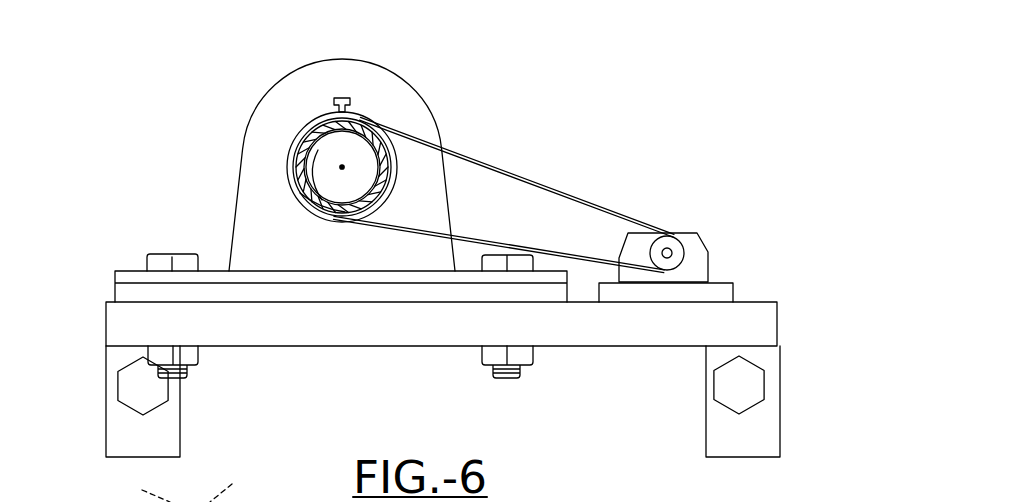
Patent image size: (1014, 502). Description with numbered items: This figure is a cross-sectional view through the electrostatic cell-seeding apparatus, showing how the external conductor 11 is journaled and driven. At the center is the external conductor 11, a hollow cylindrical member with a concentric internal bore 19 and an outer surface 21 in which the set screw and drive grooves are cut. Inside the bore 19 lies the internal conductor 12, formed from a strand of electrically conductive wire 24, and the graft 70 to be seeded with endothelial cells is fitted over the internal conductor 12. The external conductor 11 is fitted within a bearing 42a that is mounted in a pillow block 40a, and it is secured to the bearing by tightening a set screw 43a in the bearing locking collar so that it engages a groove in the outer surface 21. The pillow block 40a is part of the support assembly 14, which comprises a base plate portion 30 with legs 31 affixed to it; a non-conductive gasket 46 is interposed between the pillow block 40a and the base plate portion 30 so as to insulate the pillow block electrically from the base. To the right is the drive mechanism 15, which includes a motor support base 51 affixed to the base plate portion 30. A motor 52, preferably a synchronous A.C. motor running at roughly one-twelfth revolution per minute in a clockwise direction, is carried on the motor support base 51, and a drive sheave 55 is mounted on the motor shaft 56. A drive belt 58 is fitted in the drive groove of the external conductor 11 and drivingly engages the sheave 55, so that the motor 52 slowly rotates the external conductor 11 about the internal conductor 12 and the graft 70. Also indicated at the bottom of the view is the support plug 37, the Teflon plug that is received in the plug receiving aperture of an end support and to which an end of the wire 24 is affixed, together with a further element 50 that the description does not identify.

The external conductor 11 is at (303, 135).
The internal conductor 12 is at (348, 164).
The support assembly 14 is at (322, 141).
The drive mechanism 15 is at (708, 225).
The internal bore 19 is at (300, 193).
The outer surface 21 is at (328, 212).
The wire 24 is at (347, 171).
The base plate portion 30 is at (322, 350).
The legs 31 is at (179, 427).
The support plug 37 is at (237, 489).
The pillow block 40a is at (383, 50).
The bearing 42a is at (357, 115).
The set screw 43a is at (338, 98).
The non-conductive gasket 46 is at (122, 294).
The drive assembly 50 is at (139, 490).
The motor support base 51 is at (737, 293).
The motor 52 is at (667, 233).
The drive sheave 55 is at (687, 251).
The motor shaft 56 is at (675, 256).
The drive belt 58 is at (490, 170).
The graft 70 is at (313, 173).